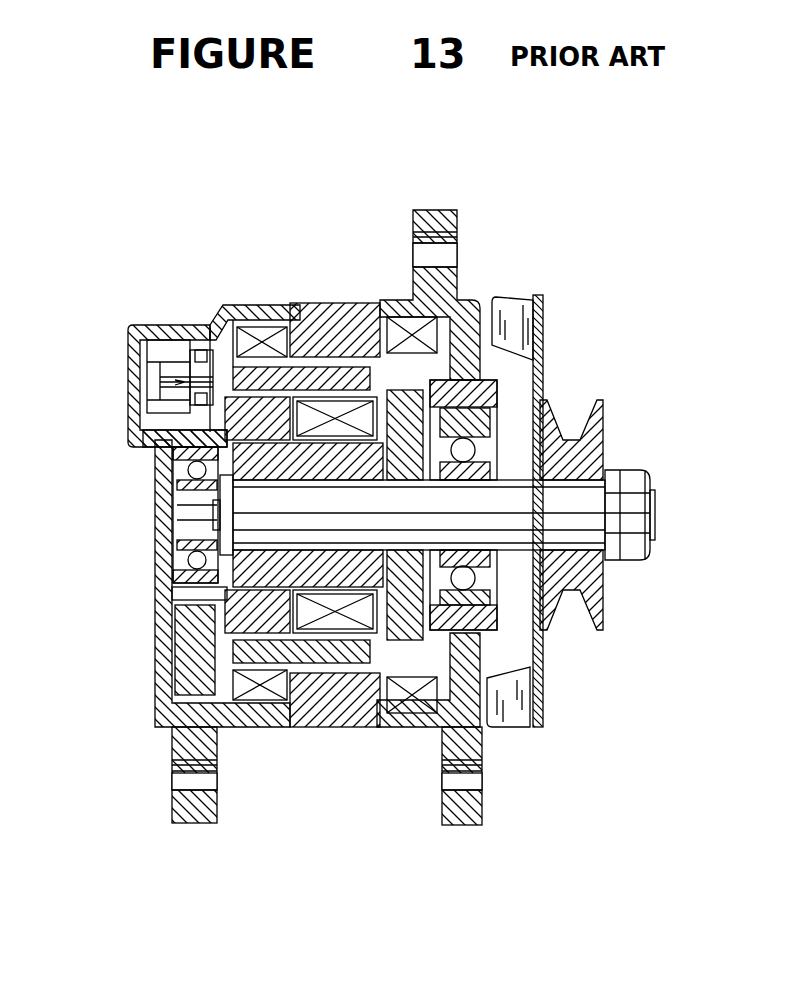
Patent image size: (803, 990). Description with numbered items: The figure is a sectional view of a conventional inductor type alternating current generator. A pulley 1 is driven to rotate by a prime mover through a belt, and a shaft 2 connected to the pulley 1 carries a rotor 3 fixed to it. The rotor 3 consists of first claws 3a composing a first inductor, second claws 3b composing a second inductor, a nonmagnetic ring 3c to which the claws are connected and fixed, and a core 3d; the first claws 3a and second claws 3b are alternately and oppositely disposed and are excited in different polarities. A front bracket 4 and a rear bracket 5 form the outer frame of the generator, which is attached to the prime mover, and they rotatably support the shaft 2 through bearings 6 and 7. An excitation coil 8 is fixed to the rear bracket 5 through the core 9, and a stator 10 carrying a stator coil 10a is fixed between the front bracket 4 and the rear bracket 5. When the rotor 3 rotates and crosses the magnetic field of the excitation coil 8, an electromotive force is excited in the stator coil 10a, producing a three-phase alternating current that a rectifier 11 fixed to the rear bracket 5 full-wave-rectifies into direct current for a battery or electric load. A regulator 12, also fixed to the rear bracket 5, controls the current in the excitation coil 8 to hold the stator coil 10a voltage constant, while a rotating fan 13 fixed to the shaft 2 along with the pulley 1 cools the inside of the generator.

The pulley 1 is at (600, 437).
The shaft 2 is at (570, 520).
The rotor 3 is at (300, 370).
The first claws 3a is at (373, 652).
The second claws 3b is at (263, 345).
The nonmagnetic ring 3c is at (331, 393).
The core 3d is at (195, 437).
The front bracket 4 is at (465, 813).
The rear bracket 5 is at (195, 810).
The bearing 6 is at (498, 432).
The bearing 7 is at (183, 483).
The excitation coil 8 is at (327, 633).
The core 9 is at (260, 610).
The stator 10 is at (353, 367).
The stator coil 10a is at (257, 355).
The rectifier 11 is at (158, 350).
The regulator 12 is at (200, 650).
The rotating fan 13 is at (530, 328).